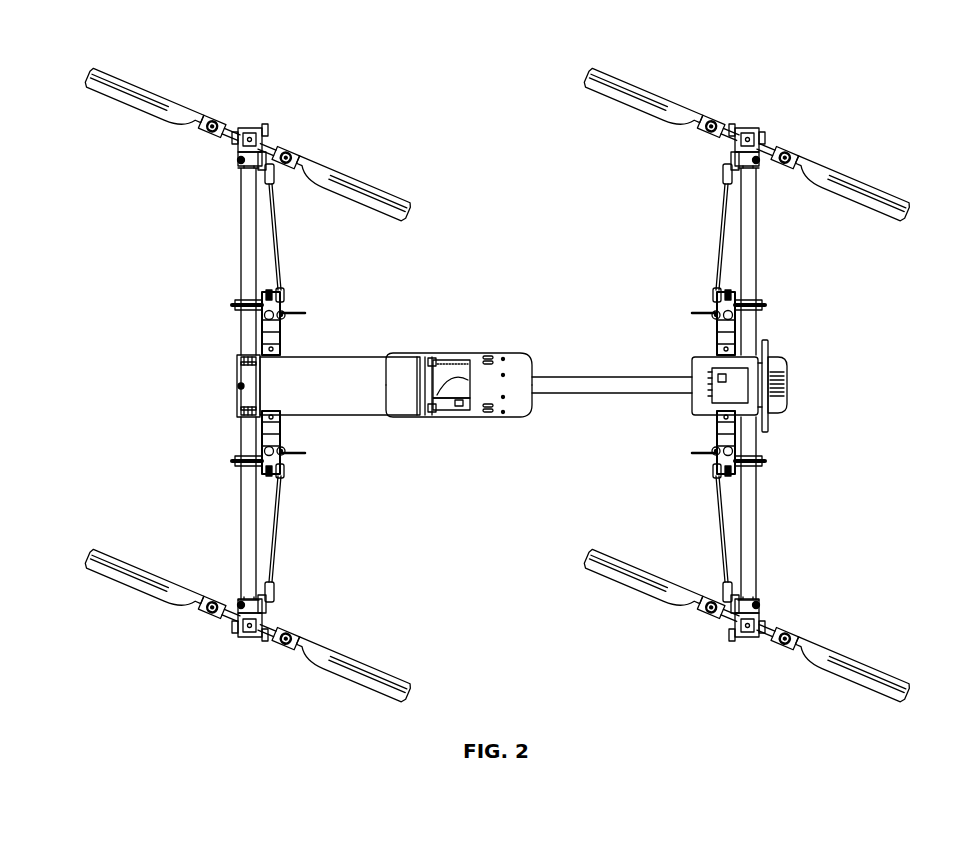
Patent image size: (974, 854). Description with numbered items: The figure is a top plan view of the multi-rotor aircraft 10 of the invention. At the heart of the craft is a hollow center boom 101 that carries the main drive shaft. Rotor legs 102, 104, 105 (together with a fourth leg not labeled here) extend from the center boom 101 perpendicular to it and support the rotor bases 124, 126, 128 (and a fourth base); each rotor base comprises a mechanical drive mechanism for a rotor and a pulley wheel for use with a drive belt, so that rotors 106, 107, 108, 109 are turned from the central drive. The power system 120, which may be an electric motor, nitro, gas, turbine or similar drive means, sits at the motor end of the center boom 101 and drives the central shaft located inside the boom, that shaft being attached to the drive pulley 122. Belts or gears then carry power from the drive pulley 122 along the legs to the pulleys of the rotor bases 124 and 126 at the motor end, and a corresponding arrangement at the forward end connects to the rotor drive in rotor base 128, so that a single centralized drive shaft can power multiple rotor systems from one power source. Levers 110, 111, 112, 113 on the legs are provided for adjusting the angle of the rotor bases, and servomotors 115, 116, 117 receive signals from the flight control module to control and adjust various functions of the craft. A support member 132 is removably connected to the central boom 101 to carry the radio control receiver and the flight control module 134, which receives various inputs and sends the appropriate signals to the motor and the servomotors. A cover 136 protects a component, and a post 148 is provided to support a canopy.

The aircraft 10 is at (58, 68).
The center boom 101 is at (600, 376).
The rotor leg 102 is at (758, 240).
The rotor leg 104 is at (240, 225).
The rotor leg 105 is at (240, 535).
The rotor 106 is at (127, 110).
The rotor 107 is at (890, 190).
The rotor 108 is at (888, 672).
The rotor 109 is at (122, 594).
The lever 110 is at (278, 240).
The lever 111 is at (283, 535).
The lever 112 is at (719, 240).
The lever 113 is at (716, 532).
The servomotor 115 is at (286, 352).
The servomotor 116 is at (713, 440).
The servomotor 117 is at (713, 345).
The power system 120 is at (730, 394).
The drive pulley 122 is at (793, 397).
The rotor base 124 is at (775, 620).
The rotor base 126 is at (775, 140).
The rotor base 128 is at (238, 642).
The support member 132 is at (487, 354).
The flight control module 134 is at (487, 418).
The cover 136 is at (386, 357).
The post 148 is at (236, 385).